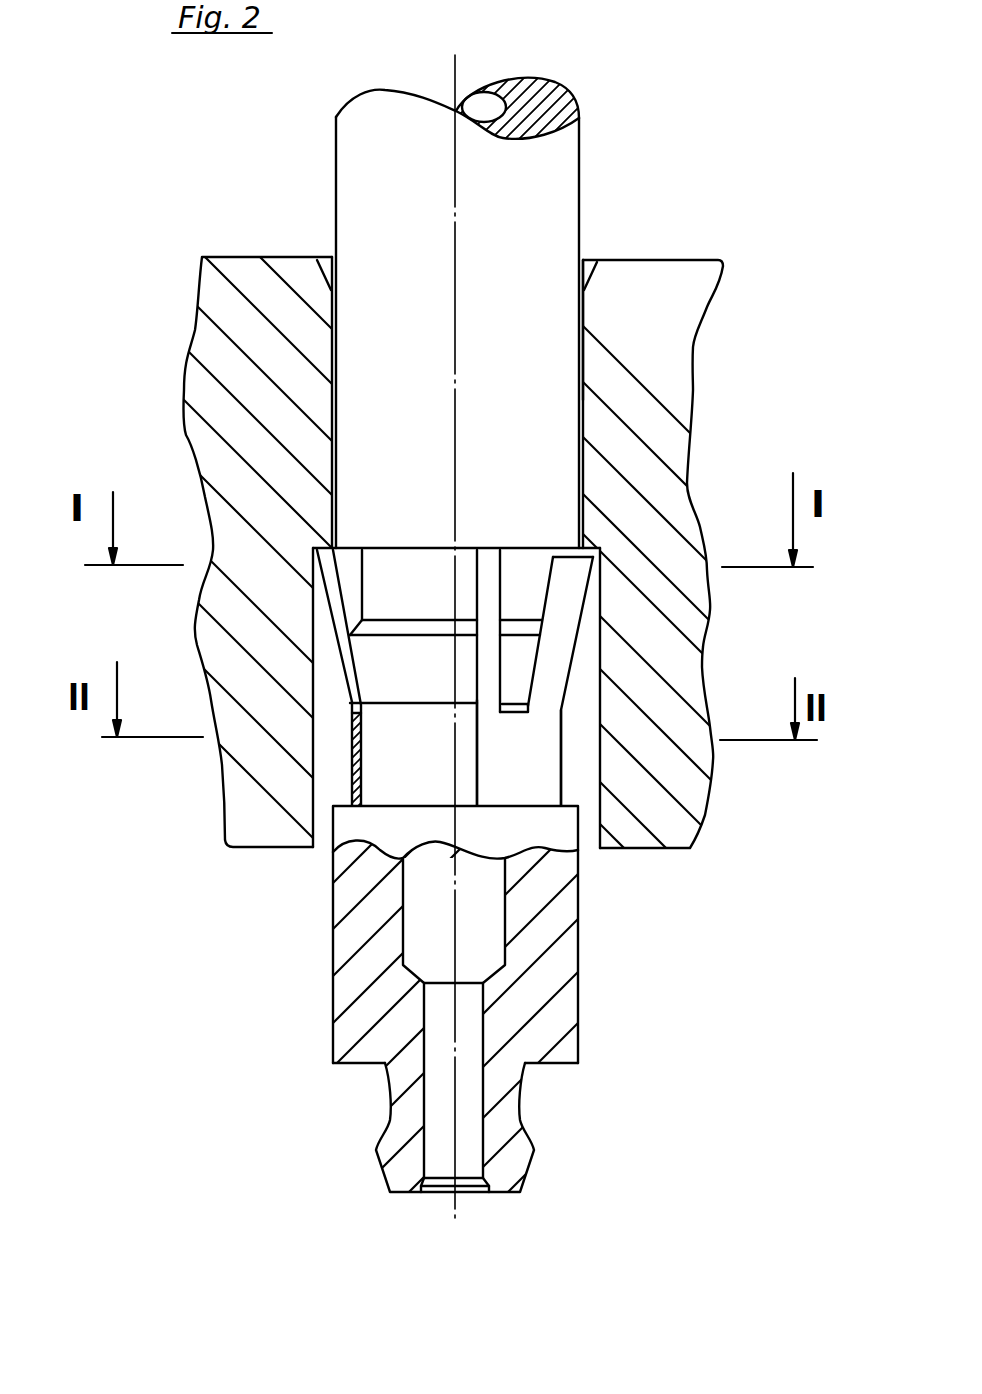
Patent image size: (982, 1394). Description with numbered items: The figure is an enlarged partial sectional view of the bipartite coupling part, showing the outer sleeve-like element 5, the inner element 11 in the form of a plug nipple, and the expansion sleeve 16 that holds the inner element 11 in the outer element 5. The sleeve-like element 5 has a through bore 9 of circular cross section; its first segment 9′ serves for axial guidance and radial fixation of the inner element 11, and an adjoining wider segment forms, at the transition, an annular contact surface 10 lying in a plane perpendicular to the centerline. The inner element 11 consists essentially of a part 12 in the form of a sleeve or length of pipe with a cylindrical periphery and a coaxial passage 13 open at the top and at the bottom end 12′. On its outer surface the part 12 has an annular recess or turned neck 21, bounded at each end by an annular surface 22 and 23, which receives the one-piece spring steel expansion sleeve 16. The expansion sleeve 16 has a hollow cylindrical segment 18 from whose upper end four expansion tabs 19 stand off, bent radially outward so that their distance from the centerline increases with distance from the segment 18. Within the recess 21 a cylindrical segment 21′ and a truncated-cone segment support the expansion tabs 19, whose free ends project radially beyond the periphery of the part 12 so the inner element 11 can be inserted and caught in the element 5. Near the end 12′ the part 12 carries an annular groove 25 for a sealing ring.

The sleeve-like element 5 is at (670, 457).
The through bore 9 is at (596, 416).
The bore segment 9′ is at (585, 353).
The annular contact surface 10 is at (312, 547).
The inner element 11 is at (648, 145).
The part 12 is at (542, 243).
The bottom end 12′ is at (507, 1194).
The passage 13 is at (422, 928).
The expansion sleeve 16 is at (592, 684).
The segment 18 is at (352, 773).
The expansion tabs 19 is at (313, 615).
The annular recess 21 is at (337, 712).
The recess segment 21′ is at (415, 580).
The annular surface 22 is at (423, 545).
The annular surface 23 is at (425, 806).
The annular groove 25 is at (372, 1100).